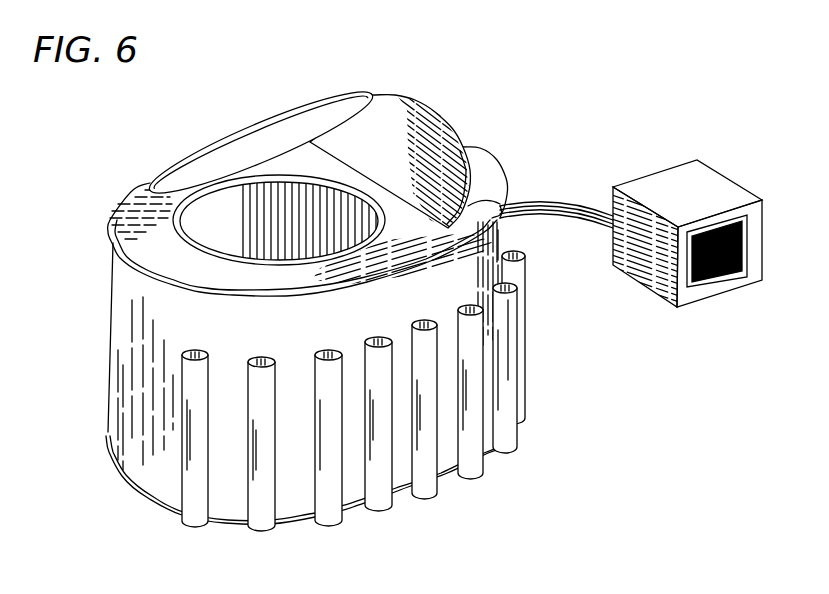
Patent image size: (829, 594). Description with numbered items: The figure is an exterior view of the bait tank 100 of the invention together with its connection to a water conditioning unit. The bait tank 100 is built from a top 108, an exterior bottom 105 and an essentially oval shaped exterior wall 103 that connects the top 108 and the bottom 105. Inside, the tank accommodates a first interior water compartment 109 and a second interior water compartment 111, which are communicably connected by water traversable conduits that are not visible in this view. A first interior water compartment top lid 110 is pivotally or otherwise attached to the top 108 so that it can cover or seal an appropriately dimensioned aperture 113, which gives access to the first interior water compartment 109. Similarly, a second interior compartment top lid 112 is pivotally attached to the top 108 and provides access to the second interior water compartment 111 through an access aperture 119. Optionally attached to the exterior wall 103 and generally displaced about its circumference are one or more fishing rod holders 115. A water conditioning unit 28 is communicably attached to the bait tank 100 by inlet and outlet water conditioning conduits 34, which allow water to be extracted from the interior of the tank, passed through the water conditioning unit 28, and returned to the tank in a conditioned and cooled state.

The bait tank 100 is at (319, 298).
The exterior wall 103 is at (125, 285).
The exterior bottom 105 is at (133, 494).
The top 108 is at (125, 200).
The first interior water compartment 109 is at (211, 225).
The first interior water compartment top lid 110 is at (263, 137).
The second interior water compartment 111 is at (473, 187).
The second interior compartment top lid 112 is at (387, 123).
The aperture 113 is at (360, 193).
The fishing rod holders 115 is at (513, 270).
The access aperture 119 is at (527, 223).
The inlet and outlet water conditioning conduits 34 is at (587, 220).
The water conditioning unit 28 is at (672, 182).